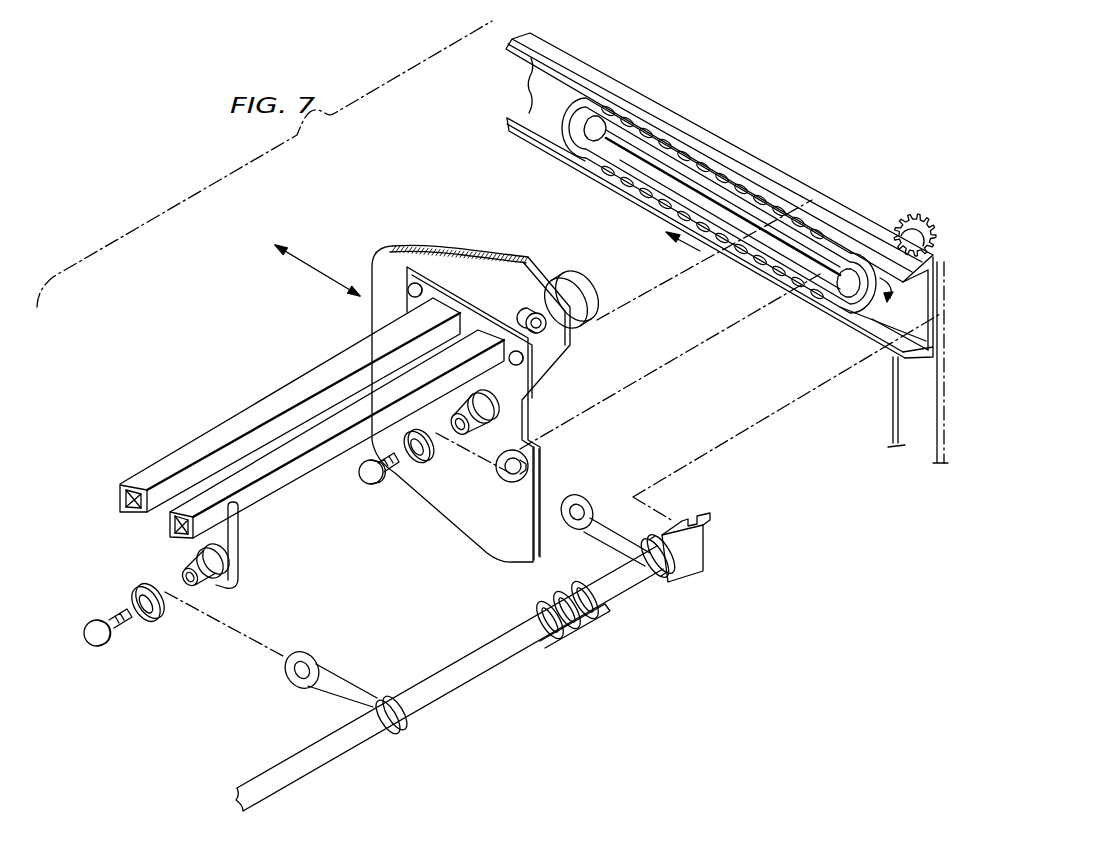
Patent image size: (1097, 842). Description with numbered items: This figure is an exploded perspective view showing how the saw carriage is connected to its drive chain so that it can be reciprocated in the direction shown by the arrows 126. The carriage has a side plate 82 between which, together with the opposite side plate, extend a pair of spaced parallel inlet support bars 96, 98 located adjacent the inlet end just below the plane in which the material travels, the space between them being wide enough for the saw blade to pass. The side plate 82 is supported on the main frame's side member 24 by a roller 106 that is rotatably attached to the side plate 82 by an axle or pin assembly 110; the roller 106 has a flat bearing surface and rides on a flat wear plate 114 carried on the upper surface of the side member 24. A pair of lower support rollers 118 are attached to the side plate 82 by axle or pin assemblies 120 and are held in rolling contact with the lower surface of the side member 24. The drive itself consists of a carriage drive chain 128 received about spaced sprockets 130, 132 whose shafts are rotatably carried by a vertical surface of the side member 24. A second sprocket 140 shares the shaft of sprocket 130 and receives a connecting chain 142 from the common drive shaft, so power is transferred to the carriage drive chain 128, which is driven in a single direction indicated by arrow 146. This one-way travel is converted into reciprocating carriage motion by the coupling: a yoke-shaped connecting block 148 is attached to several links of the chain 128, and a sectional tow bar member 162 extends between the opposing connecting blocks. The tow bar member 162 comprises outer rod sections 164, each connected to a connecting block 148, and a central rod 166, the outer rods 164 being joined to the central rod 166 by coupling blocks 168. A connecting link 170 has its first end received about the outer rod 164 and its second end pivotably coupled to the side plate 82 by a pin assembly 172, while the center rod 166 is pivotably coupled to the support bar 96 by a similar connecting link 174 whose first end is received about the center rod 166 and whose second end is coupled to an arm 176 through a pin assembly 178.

The side member 24 is at (737, 145).
The flat wear plate 114 is at (588, 70).
The carriage drive chain 128 is at (777, 282).
The sprocket 132 is at (583, 143).
The sprocket 130 is at (850, 298).
The arrow 146 is at (713, 258).
The second sprocket 140 is at (913, 215).
The connecting chain 142 is at (890, 417).
The side plate 82 is at (433, 257).
The roller 106 is at (572, 287).
The axle or pin assembly 110 is at (527, 318).
The lower support roller 118 is at (540, 460).
The axle or pin assembly 120 is at (510, 465).
The inlet support bar 98 is at (227, 423).
The inlet support bar 96 is at (308, 452).
The pin assembly 172 is at (416, 474).
The arm 176 is at (230, 540).
The pin assembly 178 is at (147, 638).
The connecting link 174 is at (323, 693).
The sectional tow bar member 162 is at (451, 699).
The central rod 166 is at (428, 682).
The coupling block 168 is at (567, 637).
The outer rod section 164 is at (630, 587).
The connecting link 170 is at (665, 584).
The connecting block 148 is at (700, 557).
The arrows 126 is at (318, 272).